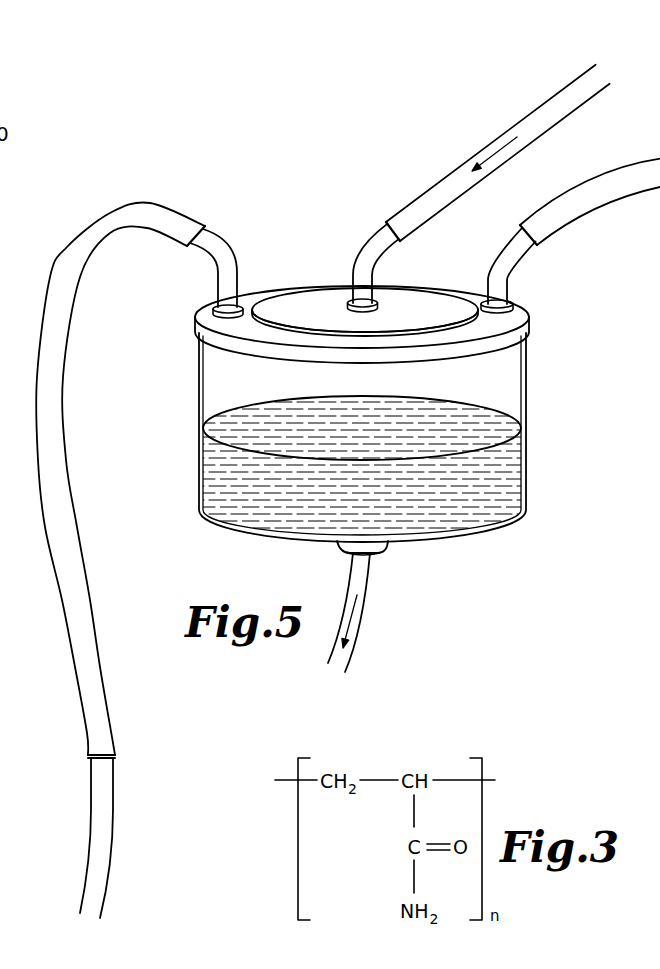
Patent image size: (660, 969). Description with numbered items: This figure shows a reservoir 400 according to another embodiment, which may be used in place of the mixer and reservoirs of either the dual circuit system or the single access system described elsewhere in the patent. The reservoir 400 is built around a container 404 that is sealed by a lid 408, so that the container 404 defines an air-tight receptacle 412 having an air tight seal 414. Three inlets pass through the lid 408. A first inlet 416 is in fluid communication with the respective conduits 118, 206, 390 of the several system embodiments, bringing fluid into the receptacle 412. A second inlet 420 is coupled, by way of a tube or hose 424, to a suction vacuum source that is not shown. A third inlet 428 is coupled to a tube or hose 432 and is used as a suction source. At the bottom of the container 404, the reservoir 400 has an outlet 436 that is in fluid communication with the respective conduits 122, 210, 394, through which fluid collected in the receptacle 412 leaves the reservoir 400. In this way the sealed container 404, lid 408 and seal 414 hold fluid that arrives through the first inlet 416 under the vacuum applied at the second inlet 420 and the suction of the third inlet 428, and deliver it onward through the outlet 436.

The reservoir 400 is at (219, 156).
The container 404 is at (200, 420).
The lid 408 is at (270, 332).
The air-tight receptacle 412 is at (512, 401).
The air tight seal 414 is at (205, 310).
The first inlet 416 is at (347, 297).
The second inlet 420 is at (512, 294).
The tube or hose 424 is at (612, 181).
The third inlet 428 is at (243, 303).
The tube or hose 432 is at (117, 216).
The outlet 436 is at (378, 552).
The conduit 118 is at (454, 153).
The conduit 206 is at (454, 153).
The conduit 390 is at (490, 142).
The conduit 122 is at (433, 612).
The conduit 210 is at (433, 612).
The conduit 394 is at (360, 637).